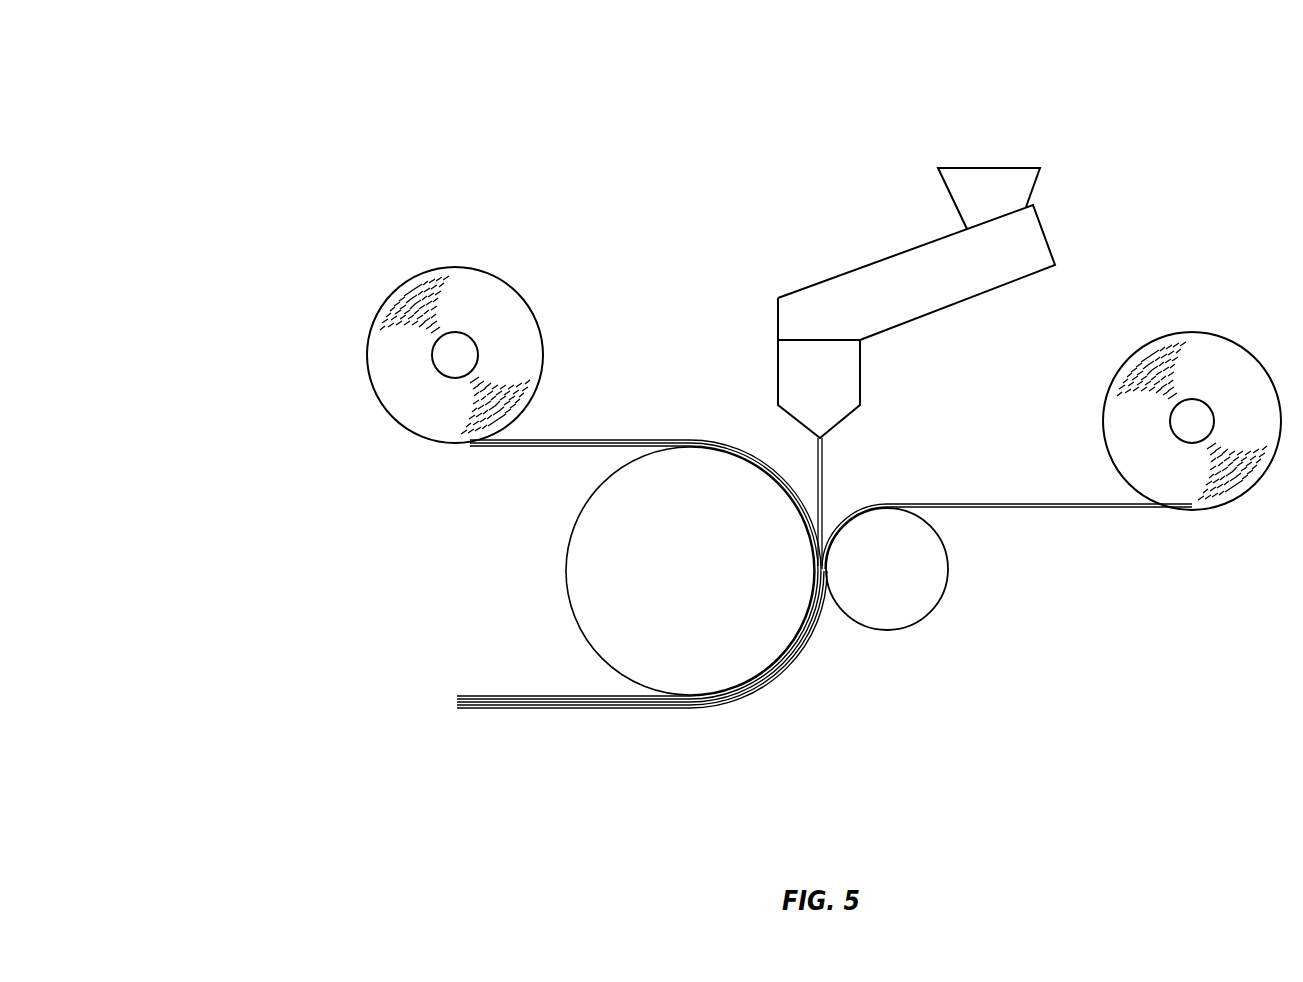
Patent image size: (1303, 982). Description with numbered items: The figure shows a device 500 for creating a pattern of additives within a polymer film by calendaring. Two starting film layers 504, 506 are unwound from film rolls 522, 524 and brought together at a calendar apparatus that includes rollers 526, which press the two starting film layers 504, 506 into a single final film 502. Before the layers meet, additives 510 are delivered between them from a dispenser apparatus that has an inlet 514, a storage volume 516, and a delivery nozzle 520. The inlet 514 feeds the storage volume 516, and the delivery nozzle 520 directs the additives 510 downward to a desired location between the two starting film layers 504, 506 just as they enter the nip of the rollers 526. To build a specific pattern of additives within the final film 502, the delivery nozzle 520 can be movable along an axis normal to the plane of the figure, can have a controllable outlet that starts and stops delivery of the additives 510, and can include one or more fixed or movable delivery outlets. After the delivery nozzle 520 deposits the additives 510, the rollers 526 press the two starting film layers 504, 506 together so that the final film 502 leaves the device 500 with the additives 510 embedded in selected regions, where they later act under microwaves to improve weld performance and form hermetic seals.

The device 500 is at (946, 590).
The final film 502 is at (480, 695).
The starting film layer 504 is at (1033, 503).
The starting film layer 506 is at (592, 438).
The additives 510 is at (825, 470).
The inlet 514 is at (1004, 168).
The storage volume 516 is at (1057, 240).
The delivery nozzle 520 is at (862, 375).
The film roll 522 is at (1235, 336).
The film roll 524 is at (385, 303).
The rollers 526 is at (567, 590).